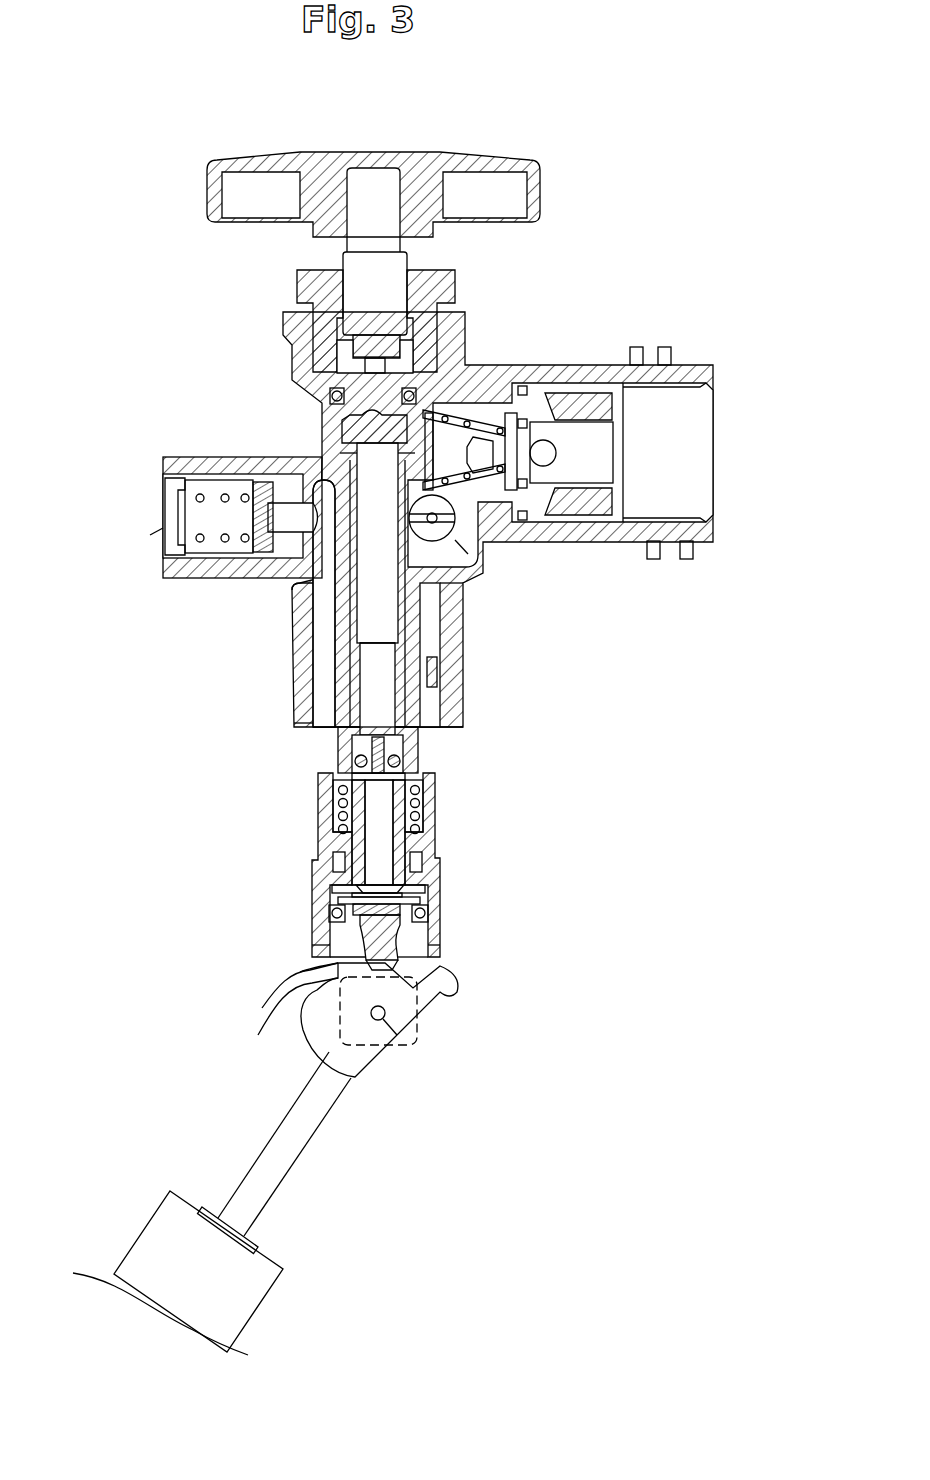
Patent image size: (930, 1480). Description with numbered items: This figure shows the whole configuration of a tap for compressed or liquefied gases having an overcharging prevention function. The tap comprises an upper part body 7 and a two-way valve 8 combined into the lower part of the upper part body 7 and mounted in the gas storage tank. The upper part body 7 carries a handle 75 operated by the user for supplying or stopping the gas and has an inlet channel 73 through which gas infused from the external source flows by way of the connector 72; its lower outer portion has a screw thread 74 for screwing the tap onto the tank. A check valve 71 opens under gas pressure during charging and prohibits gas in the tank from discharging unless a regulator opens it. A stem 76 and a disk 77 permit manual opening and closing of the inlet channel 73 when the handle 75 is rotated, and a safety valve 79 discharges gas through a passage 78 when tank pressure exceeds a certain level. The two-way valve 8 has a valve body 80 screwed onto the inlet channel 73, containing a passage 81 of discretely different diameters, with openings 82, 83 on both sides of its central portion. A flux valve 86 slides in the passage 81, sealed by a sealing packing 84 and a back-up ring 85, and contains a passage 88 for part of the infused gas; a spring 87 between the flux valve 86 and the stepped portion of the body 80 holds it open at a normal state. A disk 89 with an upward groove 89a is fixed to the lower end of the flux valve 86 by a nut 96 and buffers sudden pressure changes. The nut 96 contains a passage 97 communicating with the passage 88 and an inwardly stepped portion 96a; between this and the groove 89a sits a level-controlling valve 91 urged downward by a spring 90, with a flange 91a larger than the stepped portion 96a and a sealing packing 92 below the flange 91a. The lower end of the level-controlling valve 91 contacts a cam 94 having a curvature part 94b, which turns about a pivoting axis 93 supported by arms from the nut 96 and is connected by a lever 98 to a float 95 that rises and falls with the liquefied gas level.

The upper part body 7 is at (236, 283).
The two-way valve 8 is at (278, 953).
The check valve 71 is at (517, 490).
The connector 72 is at (592, 365).
The inlet channel 73 is at (360, 485).
The screw thread 74 is at (305, 696).
The handle 75 is at (540, 200).
The stem 76 is at (367, 353).
The disk 77 is at (343, 420).
The passage 78 is at (318, 632).
The safety valve 79 is at (165, 546).
The valve body 80 is at (313, 925).
The passage 81 is at (383, 700).
The opening 82 is at (403, 750).
The opening 83 is at (345, 750).
The sealing packing 84 is at (320, 775).
The back-up ring 85 is at (337, 870).
The flux valve 86 is at (433, 842).
The spring 87 is at (430, 787).
The passage 88 is at (323, 803).
The disk 89 is at (433, 873).
The upward groove 89a is at (337, 877).
The spring 90 is at (320, 906).
The level-controlling valve 91 is at (440, 945).
The flange 91a is at (432, 897).
The sealing packing 92 is at (430, 920).
The pivoting axis 93 is at (405, 1042).
The cam 94 is at (440, 992).
The curvature part 94b is at (417, 1010).
The float 95 is at (259, 1290).
The nut 96 is at (262, 1008).
The stepped portion 96a is at (300, 972).
The passage 97 is at (425, 933).
The lever 98 is at (274, 1178).